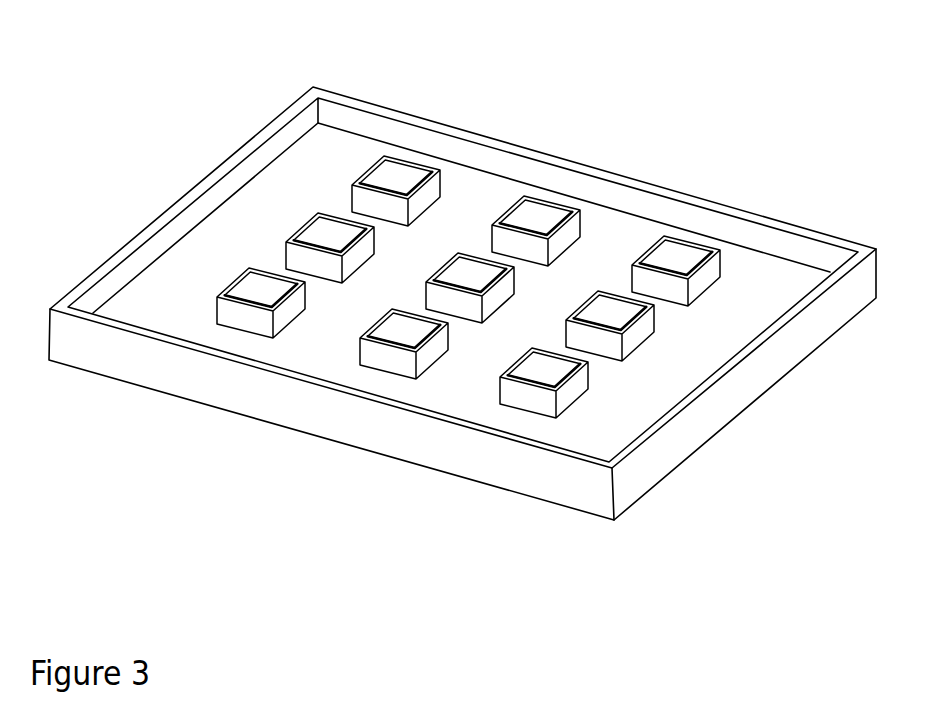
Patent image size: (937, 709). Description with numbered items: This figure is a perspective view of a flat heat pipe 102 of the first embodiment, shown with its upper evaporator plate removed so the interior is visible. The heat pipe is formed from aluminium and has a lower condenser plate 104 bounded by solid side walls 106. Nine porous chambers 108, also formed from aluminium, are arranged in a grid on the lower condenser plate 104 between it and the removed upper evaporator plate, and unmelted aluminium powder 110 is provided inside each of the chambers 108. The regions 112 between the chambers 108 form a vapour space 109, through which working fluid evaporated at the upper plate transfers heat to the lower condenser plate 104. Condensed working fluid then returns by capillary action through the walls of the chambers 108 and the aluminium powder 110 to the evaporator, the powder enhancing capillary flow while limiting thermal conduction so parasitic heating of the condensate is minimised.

The flat heat pipe 102 is at (799, 439).
The lower condenser plate 104 is at (582, 518).
The solid side walls 106 is at (135, 355).
The porous chambers 108 is at (300, 230).
The vapour space 109 is at (577, 273).
The unmelted aluminium powder 110 is at (383, 177).
The regions between the chambers 112 is at (463, 213).